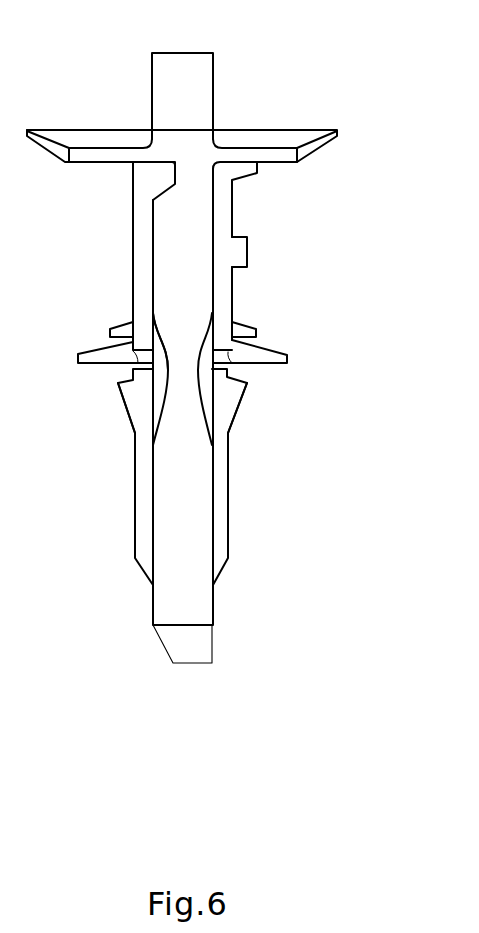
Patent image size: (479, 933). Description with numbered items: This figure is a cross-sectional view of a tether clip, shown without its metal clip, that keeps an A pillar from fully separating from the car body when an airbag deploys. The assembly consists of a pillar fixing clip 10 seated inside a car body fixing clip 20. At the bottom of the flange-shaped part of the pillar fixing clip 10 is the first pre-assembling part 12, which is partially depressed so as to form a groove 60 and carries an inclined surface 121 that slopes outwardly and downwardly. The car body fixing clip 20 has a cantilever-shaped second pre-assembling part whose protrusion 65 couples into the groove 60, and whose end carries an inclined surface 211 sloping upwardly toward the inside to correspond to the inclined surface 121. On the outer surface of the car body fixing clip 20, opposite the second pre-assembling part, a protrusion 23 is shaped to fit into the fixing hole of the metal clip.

The pillar fixing clip 10 is at (167, 521).
The first pre-assembling part 12 is at (200, 174).
The car body fixing clip 20 is at (145, 478).
The protrusion 23 is at (240, 253).
The groove 60 is at (166, 158).
The protrusion 65 is at (166, 160).
The inclined surface 121 is at (166, 198).
The inclined surface 211 is at (182, 408).